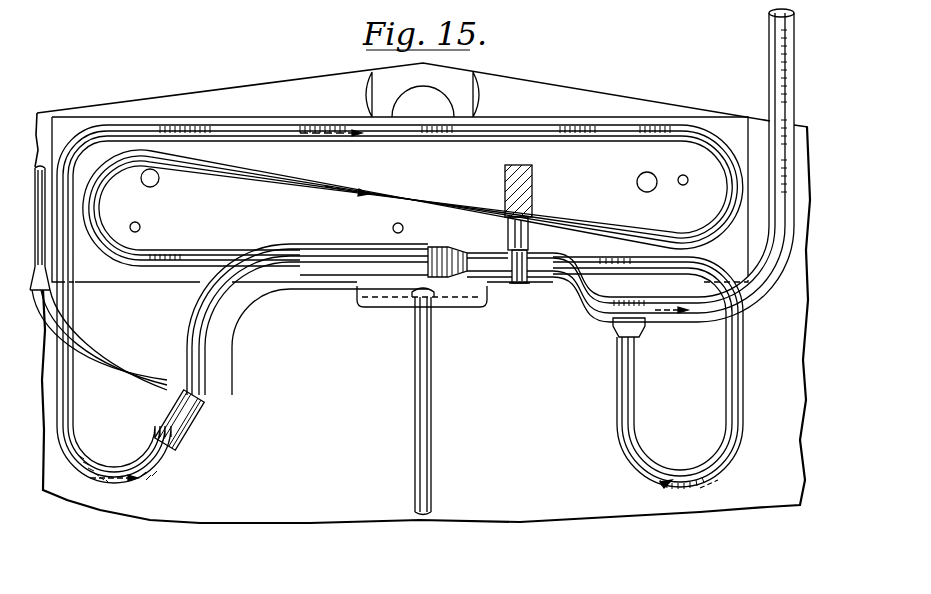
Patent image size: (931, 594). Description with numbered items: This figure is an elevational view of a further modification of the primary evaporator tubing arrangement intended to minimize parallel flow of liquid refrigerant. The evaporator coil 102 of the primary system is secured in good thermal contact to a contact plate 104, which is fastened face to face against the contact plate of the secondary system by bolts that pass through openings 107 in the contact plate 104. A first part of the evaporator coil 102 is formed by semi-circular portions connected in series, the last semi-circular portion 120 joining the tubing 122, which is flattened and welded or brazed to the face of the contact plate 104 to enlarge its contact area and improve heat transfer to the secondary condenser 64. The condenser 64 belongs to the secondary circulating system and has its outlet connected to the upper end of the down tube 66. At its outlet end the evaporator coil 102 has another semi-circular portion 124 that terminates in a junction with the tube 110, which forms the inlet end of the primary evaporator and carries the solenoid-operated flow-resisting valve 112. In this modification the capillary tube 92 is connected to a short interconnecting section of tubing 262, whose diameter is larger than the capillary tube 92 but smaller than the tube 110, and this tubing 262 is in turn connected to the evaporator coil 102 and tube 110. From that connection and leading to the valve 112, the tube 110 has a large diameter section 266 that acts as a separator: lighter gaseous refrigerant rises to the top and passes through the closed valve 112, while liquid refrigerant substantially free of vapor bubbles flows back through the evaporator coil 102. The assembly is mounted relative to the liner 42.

The liner 42 is at (247, 498).
The evaporator coil 102 is at (240, 77).
The tubing 122 is at (265, 125).
The semi-circular portion 120 is at (143, 477).
The capillary tube 92 is at (40, 207).
The interconnecting section of tubing 262 is at (117, 372).
The large diameter section 266 is at (203, 353).
The tube 110 is at (776, 73).
The contact plate 104 is at (478, 175).
The solenoid-operated flow-resisting valve 112 is at (521, 292).
The condenser 64 is at (376, 290).
The down tube 66 is at (425, 467).
The openings 107 is at (140, 227).
The semi-circular portion 124 is at (662, 470).